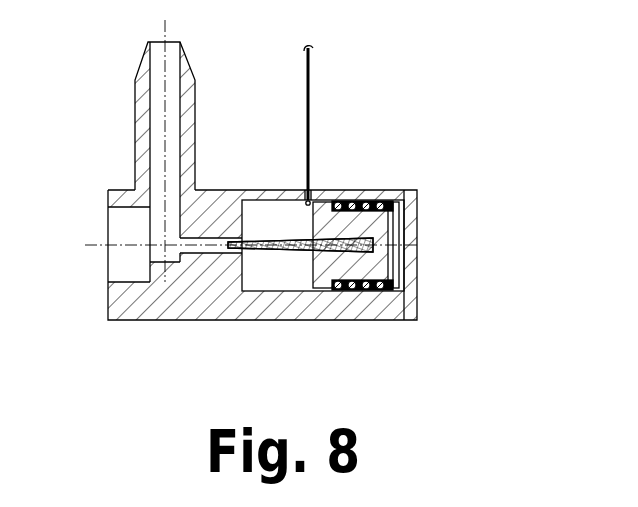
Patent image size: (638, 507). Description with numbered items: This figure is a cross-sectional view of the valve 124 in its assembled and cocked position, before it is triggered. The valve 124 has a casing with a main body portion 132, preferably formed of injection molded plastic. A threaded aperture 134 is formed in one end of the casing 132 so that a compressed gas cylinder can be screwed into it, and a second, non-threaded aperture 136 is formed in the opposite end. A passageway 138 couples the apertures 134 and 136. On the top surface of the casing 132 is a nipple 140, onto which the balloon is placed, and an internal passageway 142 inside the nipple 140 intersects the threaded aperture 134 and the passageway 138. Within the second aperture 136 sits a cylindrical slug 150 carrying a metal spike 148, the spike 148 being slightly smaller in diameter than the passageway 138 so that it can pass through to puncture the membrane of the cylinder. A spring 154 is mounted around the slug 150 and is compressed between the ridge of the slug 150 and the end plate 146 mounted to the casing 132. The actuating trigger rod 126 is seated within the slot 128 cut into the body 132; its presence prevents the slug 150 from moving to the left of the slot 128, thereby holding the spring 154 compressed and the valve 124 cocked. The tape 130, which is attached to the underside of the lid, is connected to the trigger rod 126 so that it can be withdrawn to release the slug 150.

The valve 124 is at (436, 112).
The actuating trigger rod 126 is at (307, 206).
The slot 128 is at (312, 191).
The tape 130 is at (310, 90).
The main body portion 132 is at (217, 190).
The threaded aperture 134 is at (117, 282).
The second non-threaded aperture 136 is at (270, 292).
The passageway 138 is at (205, 245).
The nipple 140 is at (199, 84).
The internal passageway 142 is at (141, 95).
The cover 146 is at (418, 228).
The metal spike 148 is at (262, 250).
The cylindrical slug 150 is at (333, 285).
The spring 154 is at (372, 199).